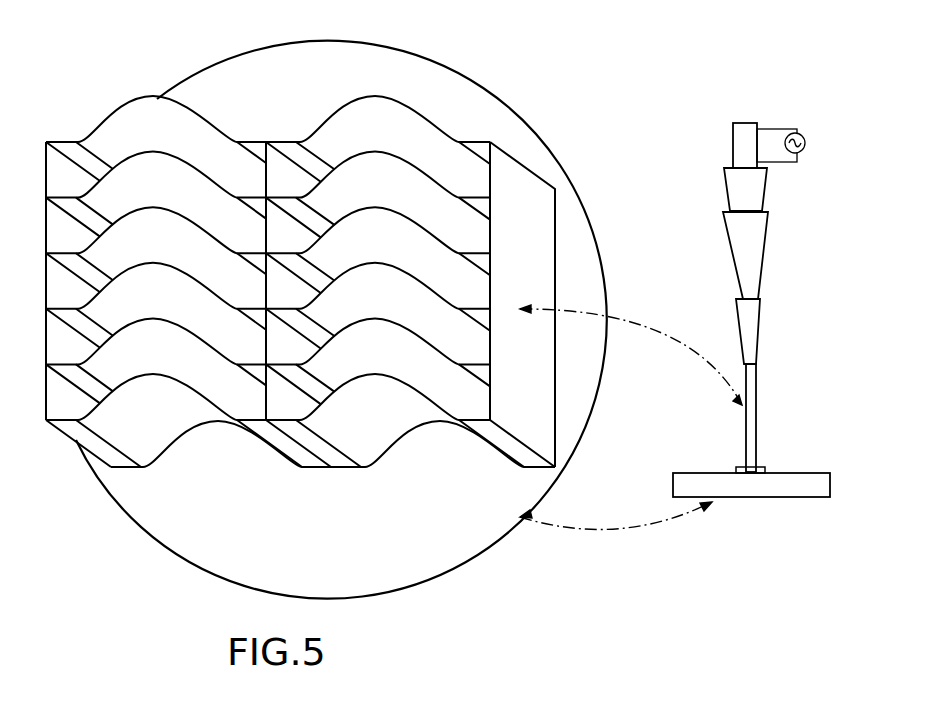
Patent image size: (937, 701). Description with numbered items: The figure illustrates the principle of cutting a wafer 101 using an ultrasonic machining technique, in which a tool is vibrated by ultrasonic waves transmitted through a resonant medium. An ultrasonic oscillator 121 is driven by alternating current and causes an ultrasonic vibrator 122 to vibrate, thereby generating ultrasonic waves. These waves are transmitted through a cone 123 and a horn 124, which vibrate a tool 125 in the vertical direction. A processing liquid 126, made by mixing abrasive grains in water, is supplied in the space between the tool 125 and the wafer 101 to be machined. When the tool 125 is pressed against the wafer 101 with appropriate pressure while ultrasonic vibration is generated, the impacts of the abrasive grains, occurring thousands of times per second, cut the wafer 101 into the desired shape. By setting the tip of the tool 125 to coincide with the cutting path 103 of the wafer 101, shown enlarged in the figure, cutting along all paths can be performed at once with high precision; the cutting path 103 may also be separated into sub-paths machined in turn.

The wafer 101 is at (466, 78).
The cutting path 103 is at (333, 112).
The ultrasonic oscillator 121 is at (733, 145).
The ultrasonic vibrator 122 is at (767, 195).
The cone 123 is at (767, 258).
The horn 124 is at (760, 334).
The tool 125 is at (757, 390).
The processing liquid 126 is at (737, 470).